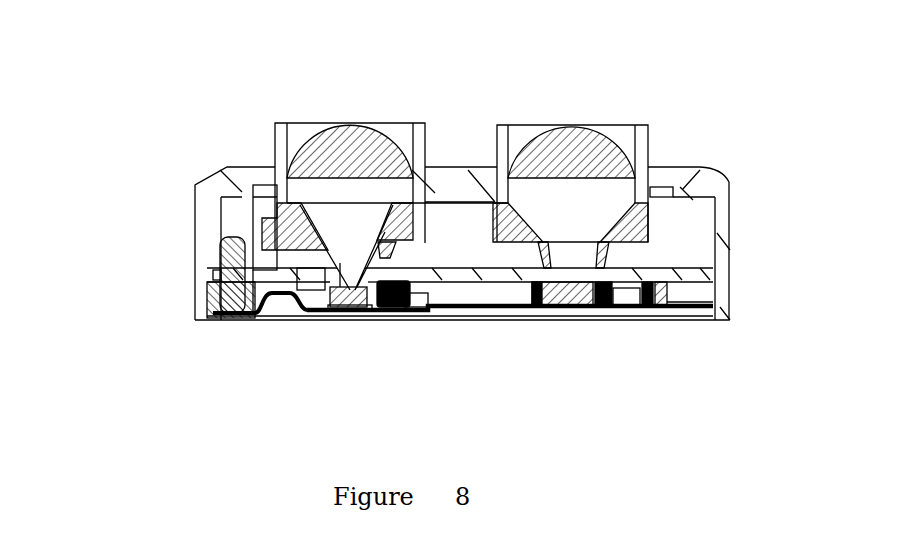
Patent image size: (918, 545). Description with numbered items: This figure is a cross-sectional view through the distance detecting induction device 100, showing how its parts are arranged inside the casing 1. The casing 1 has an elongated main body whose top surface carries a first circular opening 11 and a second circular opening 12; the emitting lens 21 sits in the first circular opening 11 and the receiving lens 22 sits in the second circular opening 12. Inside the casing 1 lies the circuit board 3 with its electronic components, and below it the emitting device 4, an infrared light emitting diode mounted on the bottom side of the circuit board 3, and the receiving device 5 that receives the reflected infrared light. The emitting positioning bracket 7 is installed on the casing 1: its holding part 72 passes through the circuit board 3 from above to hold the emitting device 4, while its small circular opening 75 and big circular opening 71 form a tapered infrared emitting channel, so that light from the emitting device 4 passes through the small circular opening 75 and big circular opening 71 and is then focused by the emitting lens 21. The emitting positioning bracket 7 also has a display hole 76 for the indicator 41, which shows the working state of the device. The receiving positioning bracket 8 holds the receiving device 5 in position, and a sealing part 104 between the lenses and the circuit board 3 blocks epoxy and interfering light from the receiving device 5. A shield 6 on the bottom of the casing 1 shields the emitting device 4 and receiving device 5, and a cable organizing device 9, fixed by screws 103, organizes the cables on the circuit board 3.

The distance detecting induction device 100 is at (74, 97).
The casing 1 is at (705, 173).
The circuit board 3 is at (693, 276).
The emitting device 4 is at (352, 300).
The receiving device 5 is at (563, 300).
The shield 6 is at (487, 320).
The emitting positioning bracket 7 is at (262, 228).
The receiving positioning bracket 8 is at (603, 300).
The cable organizing device 9 is at (260, 320).
The first circular opening 11 is at (407, 125).
The second circular opening 12 is at (633, 127).
The emitting lens 21 is at (350, 150).
The receiving lens 22 is at (563, 150).
The indicator 41 is at (380, 300).
The big circular opening 71 is at (330, 212).
The holding part 72 is at (373, 282).
The small circular opening 75 is at (343, 303).
The display hole 76 is at (427, 300).
The screws 103 is at (215, 270).
The sealing part 104 is at (610, 237).